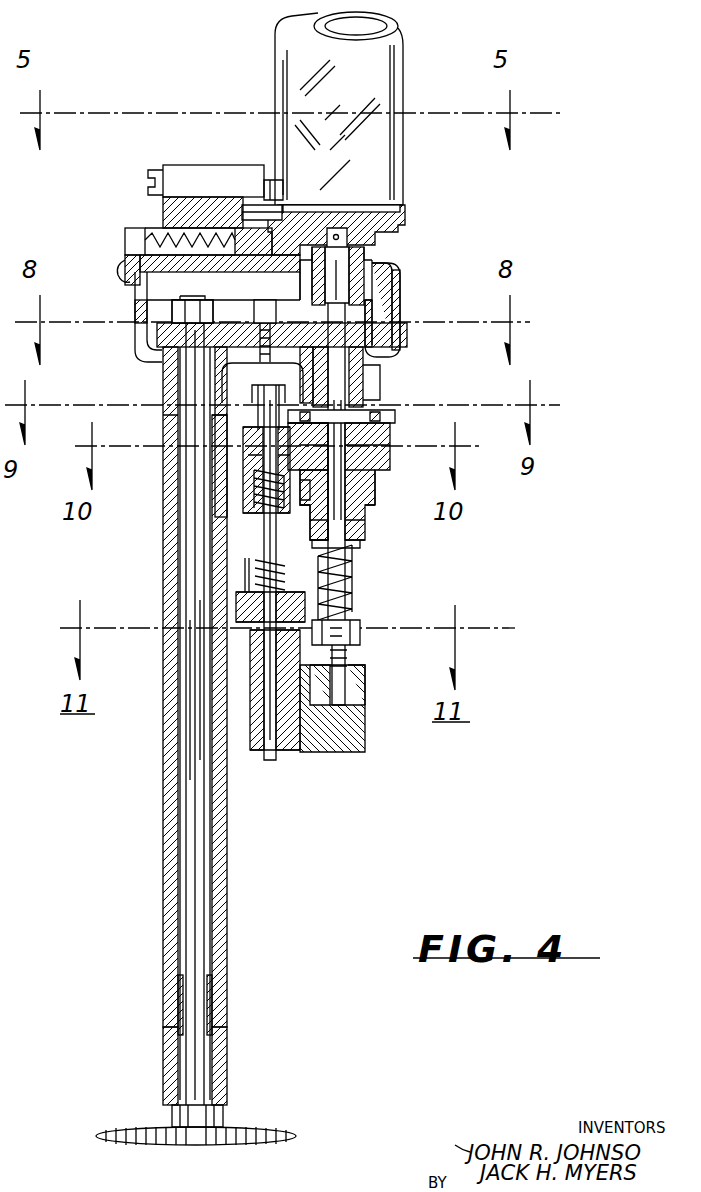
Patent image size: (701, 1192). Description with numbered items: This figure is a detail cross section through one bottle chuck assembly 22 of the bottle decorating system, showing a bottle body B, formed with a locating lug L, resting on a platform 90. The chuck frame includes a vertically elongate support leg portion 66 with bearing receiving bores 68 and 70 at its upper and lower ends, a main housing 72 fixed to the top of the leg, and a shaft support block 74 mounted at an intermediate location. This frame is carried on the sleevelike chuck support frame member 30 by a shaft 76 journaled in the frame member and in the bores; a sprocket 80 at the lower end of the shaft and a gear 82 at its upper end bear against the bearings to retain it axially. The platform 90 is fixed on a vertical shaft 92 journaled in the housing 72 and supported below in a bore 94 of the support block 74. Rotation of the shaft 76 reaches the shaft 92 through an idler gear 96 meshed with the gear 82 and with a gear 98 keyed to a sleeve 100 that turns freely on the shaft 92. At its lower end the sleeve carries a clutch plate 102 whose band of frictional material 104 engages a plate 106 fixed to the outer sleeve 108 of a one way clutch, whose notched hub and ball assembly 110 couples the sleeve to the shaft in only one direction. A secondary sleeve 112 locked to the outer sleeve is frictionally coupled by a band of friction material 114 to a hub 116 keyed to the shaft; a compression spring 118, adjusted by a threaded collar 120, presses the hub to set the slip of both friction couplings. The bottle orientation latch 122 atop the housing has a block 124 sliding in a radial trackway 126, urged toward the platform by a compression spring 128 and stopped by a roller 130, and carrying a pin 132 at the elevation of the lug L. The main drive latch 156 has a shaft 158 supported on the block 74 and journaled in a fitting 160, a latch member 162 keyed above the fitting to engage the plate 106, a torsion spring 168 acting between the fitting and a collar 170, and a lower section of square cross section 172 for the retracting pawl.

The bottle body B is at (392, 50).
The locating lug L is at (298, 160).
The bottle chuck assembly 22 is at (434, 282).
The chuck support frame member 30 is at (170, 772).
The support leg portion 66 is at (166, 1057).
The bearing receiving bore 68 is at (190, 393).
The bearing receiving bore 70 is at (172, 418).
The main housing 72 is at (243, 386).
The shaft support block 74 is at (350, 753).
The shaft 76 is at (188, 818).
The sprocket 80 is at (150, 1146).
The gear 82 is at (181, 301).
The platform 90 is at (408, 212).
The vertical shaft 92 is at (343, 273).
The bore 94 is at (346, 690).
The idler gear 96 is at (242, 318).
The gear 98 is at (398, 342).
The sleeve 100 is at (355, 380).
The clutch plate 102 is at (375, 405).
The band of frictional material 104 is at (385, 420).
The plate 106 is at (392, 426).
The outer sleeve 108 is at (395, 470).
The notched hub and ball assembly 110 is at (386, 462).
The secondary sleeve 112 is at (372, 503).
The band of friction material 114 is at (370, 520).
The hub 116 is at (368, 535).
The compression spring 118 is at (356, 570).
The collar 120 is at (362, 632).
The bottle orientation latch 122 is at (171, 192).
The block 124 is at (168, 210).
The trackway 126 is at (148, 250).
The compression spring 128 is at (153, 232).
The roller 130 is at (253, 208).
The pin 132 is at (275, 180).
The main drive latch 156 is at (243, 432).
The shaft 158 is at (265, 537).
The fitting 160 is at (252, 455).
The latch member 162 is at (262, 395).
The torsion spring 168 is at (250, 486).
The collar 170 is at (246, 607).
The section of square cross section 172 is at (265, 660).